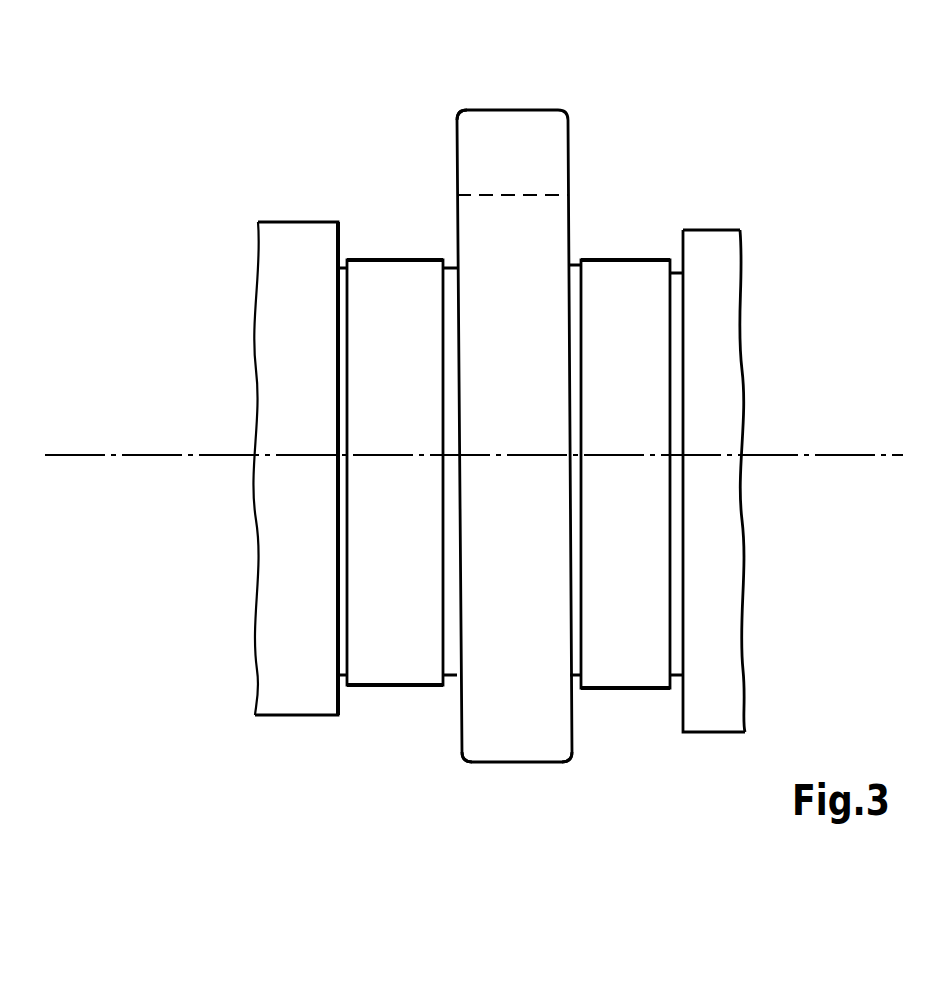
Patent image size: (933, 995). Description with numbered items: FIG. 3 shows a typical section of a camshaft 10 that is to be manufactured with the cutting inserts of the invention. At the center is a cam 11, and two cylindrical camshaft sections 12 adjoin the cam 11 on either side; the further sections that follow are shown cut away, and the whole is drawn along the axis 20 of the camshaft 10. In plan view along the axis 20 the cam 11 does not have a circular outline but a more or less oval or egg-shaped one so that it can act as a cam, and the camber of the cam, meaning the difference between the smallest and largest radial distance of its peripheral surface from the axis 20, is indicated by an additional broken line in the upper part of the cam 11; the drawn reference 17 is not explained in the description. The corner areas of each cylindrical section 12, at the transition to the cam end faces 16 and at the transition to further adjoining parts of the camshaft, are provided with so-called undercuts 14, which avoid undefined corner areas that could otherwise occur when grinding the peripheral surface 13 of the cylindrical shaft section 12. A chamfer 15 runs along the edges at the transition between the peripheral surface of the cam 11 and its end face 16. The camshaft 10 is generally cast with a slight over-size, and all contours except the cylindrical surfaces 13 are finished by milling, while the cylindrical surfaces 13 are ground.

The camshaft 10 is at (733, 230).
The cam 11 is at (510, 730).
The cylindrical camshaft section 12 is at (392, 665).
The peripheral surface 13 is at (628, 262).
The undercut 14 is at (445, 262).
The chamfer 15 is at (455, 115).
The cam end face 16 is at (461, 725).
The end face 17 is at (509, 110).
The axis 20 is at (793, 450).